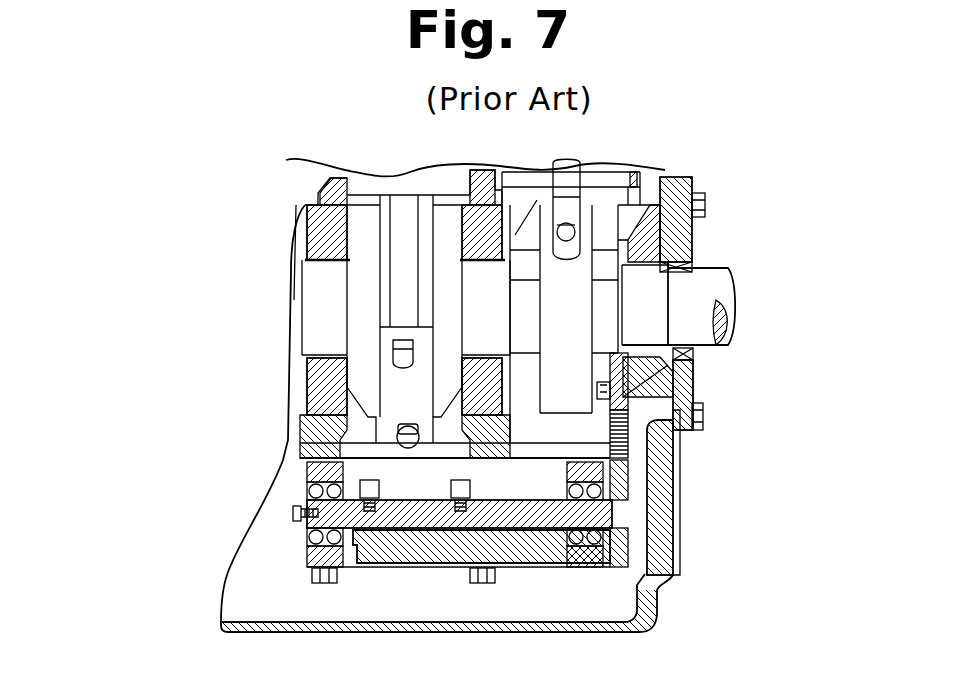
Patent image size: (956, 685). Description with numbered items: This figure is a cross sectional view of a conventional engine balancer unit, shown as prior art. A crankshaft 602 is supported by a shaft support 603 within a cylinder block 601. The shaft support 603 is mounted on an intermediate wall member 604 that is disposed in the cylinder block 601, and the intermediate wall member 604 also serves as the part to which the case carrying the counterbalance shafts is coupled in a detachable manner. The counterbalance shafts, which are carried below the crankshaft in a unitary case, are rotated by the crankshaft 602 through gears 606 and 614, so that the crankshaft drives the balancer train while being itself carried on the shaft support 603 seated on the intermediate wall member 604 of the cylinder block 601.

The cylinder block 601 is at (683, 186).
The crankshaft 602 is at (704, 283).
The shaft support 603 is at (465, 234).
The intermediate wall member 604 is at (318, 428).
The gear 606 is at (645, 450).
The gear 614 is at (624, 548).